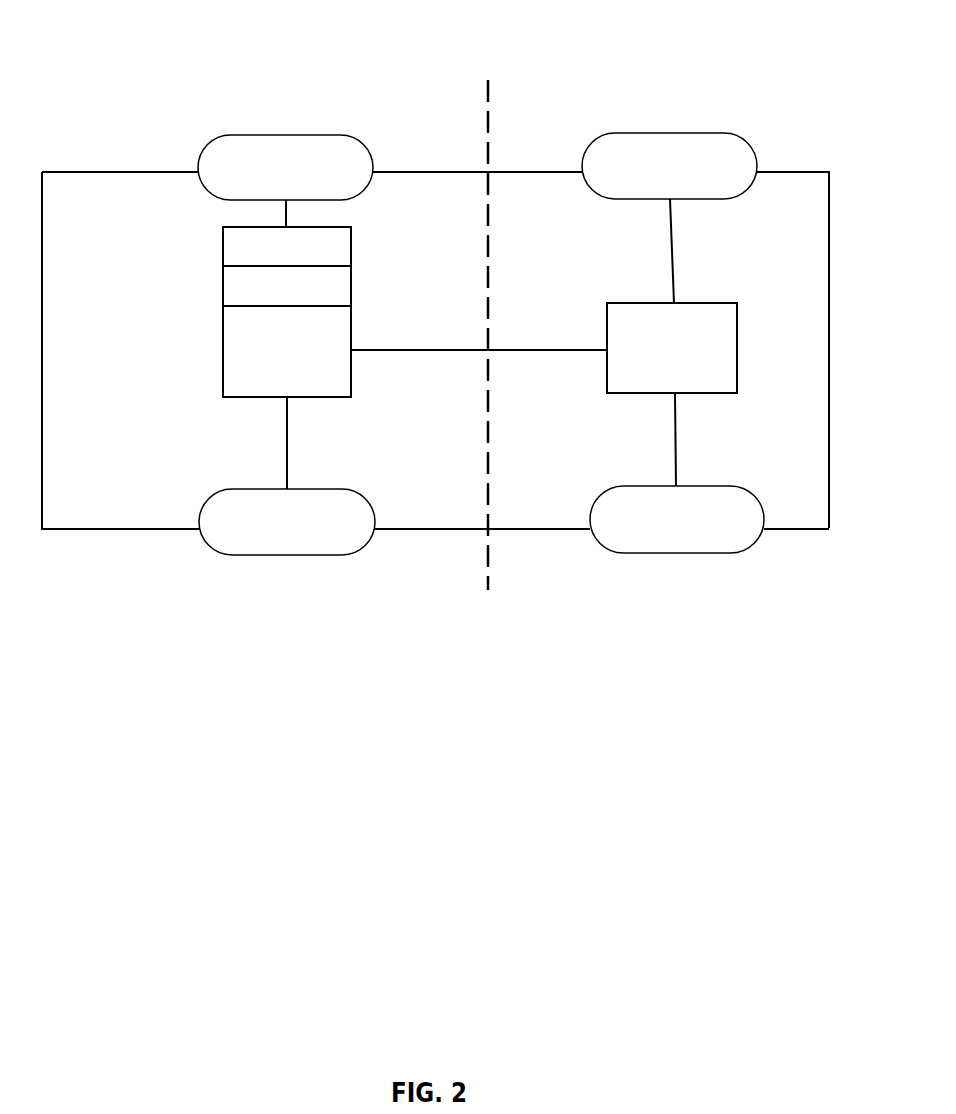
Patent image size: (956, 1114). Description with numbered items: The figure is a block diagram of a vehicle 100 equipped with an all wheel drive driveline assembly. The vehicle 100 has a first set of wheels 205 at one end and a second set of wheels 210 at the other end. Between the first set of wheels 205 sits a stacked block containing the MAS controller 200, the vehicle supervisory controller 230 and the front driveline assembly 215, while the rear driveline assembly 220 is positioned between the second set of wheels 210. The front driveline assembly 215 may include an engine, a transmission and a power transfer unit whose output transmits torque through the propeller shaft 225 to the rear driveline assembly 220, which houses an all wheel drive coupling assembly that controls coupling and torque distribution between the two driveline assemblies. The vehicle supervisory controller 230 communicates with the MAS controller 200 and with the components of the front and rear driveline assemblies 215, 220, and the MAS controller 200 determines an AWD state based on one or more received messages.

The vehicle 100 is at (157, 437).
The first set of wheels 205 is at (288, 170).
The second set of wheels 210 is at (667, 170).
The MAS controller 200 is at (287, 246).
The vehicle supervisory controller 230 is at (287, 286).
The front driveline assembly 215 is at (287, 351).
The rear driveline assembly 220 is at (672, 348).
The propeller shaft 225 is at (504, 349).